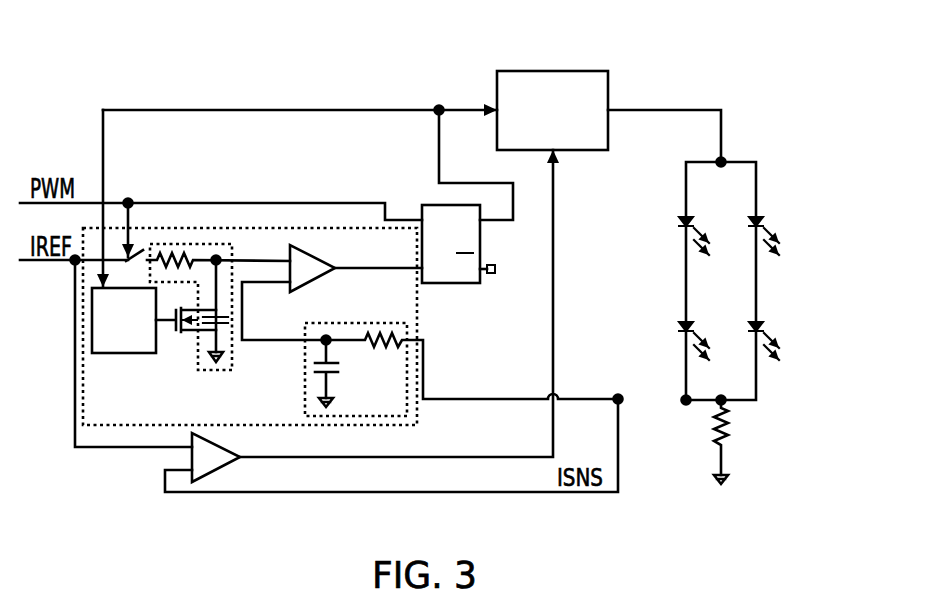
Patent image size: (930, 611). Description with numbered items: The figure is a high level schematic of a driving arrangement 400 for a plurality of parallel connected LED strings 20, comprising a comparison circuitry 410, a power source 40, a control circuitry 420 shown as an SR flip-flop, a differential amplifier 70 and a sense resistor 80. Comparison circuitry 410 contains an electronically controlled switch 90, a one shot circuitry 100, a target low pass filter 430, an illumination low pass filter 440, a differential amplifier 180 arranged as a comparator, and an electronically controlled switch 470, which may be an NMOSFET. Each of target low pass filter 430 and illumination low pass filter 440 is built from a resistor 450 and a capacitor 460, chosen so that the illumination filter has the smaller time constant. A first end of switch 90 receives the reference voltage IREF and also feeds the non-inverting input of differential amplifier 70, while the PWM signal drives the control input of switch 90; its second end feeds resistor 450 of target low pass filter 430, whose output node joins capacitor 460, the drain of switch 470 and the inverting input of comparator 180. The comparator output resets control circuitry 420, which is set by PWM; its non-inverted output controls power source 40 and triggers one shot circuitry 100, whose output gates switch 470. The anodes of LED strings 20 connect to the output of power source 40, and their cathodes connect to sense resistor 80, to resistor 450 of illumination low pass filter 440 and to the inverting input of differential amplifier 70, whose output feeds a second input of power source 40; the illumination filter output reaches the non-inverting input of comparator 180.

The driving arrangement 400 is at (152, 83).
The power source 40 is at (549, 70).
The electronically controlled switch 90 is at (142, 250).
The resistor 450 is at (180, 256).
The target low pass filter 430 is at (214, 371).
The one shot circuitry 100 is at (128, 354).
The electronically controlled switch 470 is at (186, 332).
The capacitor 460 is at (229, 319).
The differential amplifier 180 is at (322, 277).
The control circuitry 420 is at (481, 243).
The comparison circuitry 410 is at (418, 323).
The illumination low pass filter 440 is at (304, 392).
The differential amplifier 70 is at (190, 458).
The LED strings 20 is at (685, 197).
The sense resistor 80 is at (733, 431).